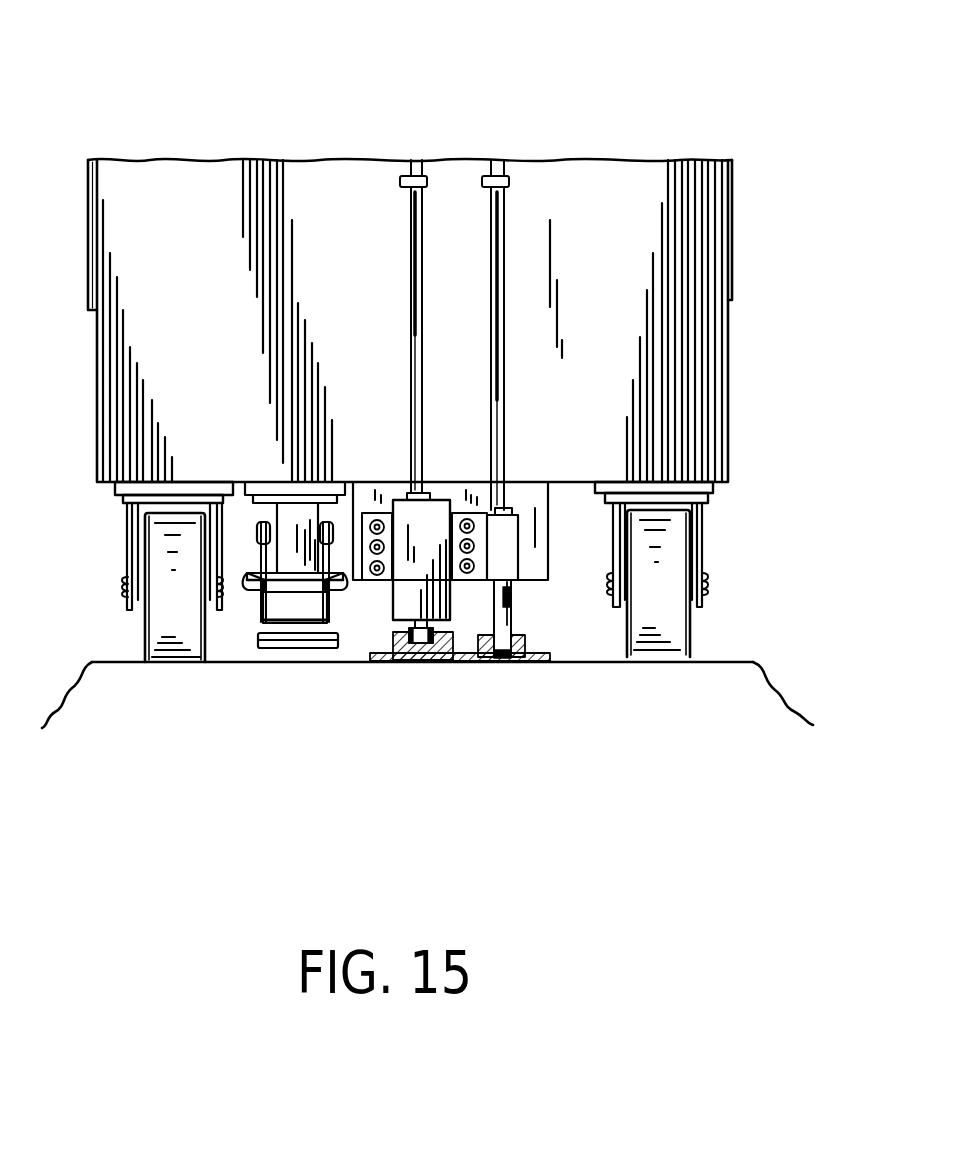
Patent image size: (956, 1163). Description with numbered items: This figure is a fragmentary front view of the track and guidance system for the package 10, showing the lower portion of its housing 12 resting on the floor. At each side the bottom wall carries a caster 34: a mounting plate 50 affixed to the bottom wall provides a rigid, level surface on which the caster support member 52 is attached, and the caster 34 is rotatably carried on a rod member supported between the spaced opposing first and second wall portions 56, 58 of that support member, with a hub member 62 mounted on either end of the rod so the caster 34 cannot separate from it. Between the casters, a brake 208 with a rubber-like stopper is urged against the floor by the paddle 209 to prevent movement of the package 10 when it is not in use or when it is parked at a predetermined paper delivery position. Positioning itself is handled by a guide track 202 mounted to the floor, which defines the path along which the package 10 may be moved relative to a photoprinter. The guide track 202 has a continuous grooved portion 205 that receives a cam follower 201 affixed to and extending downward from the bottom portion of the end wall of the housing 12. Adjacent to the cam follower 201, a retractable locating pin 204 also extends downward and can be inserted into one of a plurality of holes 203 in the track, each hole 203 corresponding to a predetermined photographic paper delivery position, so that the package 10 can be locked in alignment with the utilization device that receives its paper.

The package 10 is at (550, 135).
The housing 12 is at (728, 381).
The caster 34 is at (441, 544).
The mounting plate 50 is at (728, 486).
The caster support member 52 is at (734, 503).
The first wall portion 56 is at (702, 538).
The second wall portion 58 is at (612, 542).
The hub member 62 is at (712, 572).
The cam follower 201 is at (407, 632).
The guide track 202 is at (387, 657).
The hole 203 is at (517, 658).
The retractable locating pin 204 is at (512, 602).
The grooved portion 205 is at (425, 658).
The brake 208 is at (285, 647).
The paddle 209 is at (278, 585).